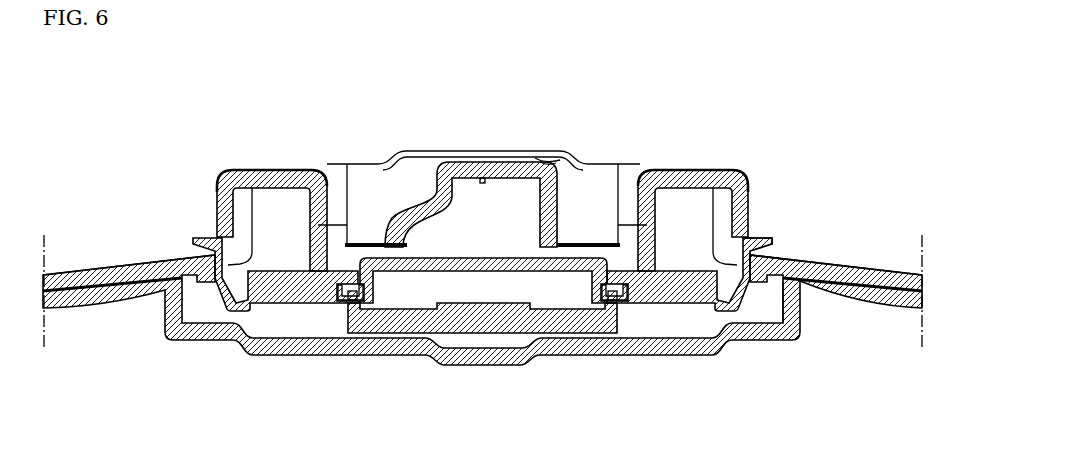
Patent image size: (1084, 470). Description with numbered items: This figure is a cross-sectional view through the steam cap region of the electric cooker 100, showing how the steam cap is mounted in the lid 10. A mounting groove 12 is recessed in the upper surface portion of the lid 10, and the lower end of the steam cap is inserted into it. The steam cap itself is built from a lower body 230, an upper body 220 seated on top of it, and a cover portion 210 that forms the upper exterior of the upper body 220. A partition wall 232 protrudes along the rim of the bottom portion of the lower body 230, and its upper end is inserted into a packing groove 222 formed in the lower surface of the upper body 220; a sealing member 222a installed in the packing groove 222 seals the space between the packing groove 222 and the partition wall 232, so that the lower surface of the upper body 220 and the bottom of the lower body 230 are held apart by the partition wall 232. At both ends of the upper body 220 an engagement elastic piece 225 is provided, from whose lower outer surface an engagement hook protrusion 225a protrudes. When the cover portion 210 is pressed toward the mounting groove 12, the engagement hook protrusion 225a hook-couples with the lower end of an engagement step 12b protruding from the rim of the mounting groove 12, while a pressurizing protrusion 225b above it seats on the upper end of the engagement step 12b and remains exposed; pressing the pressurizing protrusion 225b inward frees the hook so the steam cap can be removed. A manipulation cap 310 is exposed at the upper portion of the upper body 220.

The electric cooker 100 is at (112, 102).
The lid 10 is at (364, 364).
The mounting groove 12 is at (503, 307).
The engagement step 12b is at (775, 252).
The cover portion 210 is at (700, 163).
The upper body 220 is at (687, 258).
The packing groove 222 is at (535, 335).
The sealing member 222a is at (618, 303).
The engagement elastic piece 225 is at (561, 289).
The engagement hook protrusion 225a is at (760, 308).
The pressurizing protrusion 225b is at (772, 251).
The lower body 230 is at (569, 340).
The partition wall 232 is at (614, 297).
The manipulation cap 310 is at (498, 146).